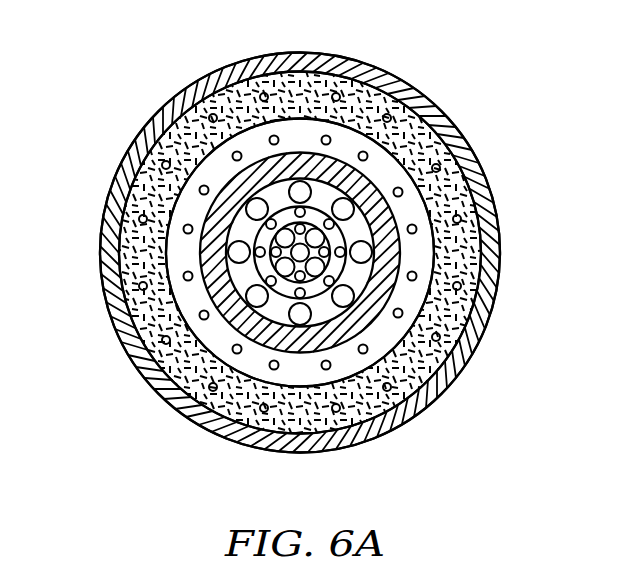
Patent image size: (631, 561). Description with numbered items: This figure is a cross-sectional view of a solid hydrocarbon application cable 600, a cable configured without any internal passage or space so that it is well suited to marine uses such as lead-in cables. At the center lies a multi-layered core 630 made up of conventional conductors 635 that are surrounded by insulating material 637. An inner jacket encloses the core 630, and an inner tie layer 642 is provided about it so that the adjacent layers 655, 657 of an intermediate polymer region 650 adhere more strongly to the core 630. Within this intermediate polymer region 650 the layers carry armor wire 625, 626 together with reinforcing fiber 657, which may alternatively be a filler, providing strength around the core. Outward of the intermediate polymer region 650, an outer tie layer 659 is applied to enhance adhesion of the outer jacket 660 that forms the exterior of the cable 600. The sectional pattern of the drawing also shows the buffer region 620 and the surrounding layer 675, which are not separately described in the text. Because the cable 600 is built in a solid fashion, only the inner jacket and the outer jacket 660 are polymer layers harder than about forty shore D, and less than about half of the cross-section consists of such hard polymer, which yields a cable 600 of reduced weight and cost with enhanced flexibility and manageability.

The solid cable 600 is at (529, 81).
The buffer tube 620 is at (337, 348).
The armor wire 625 is at (184, 228).
The armor wire 626 is at (440, 343).
The core 630 is at (347, 146).
The conductors 635 is at (236, 255).
The insulating material 637 is at (288, 212).
The inner tie layer 642 is at (166, 162).
The intermediate polymer region 650 is at (264, 394).
The layer 655 is at (217, 342).
The reinforcing fiber 657 is at (464, 284).
The outer tie layer 659 is at (482, 193).
The outer jacket 660 is at (469, 193).
The strength member layer 675 is at (188, 130).